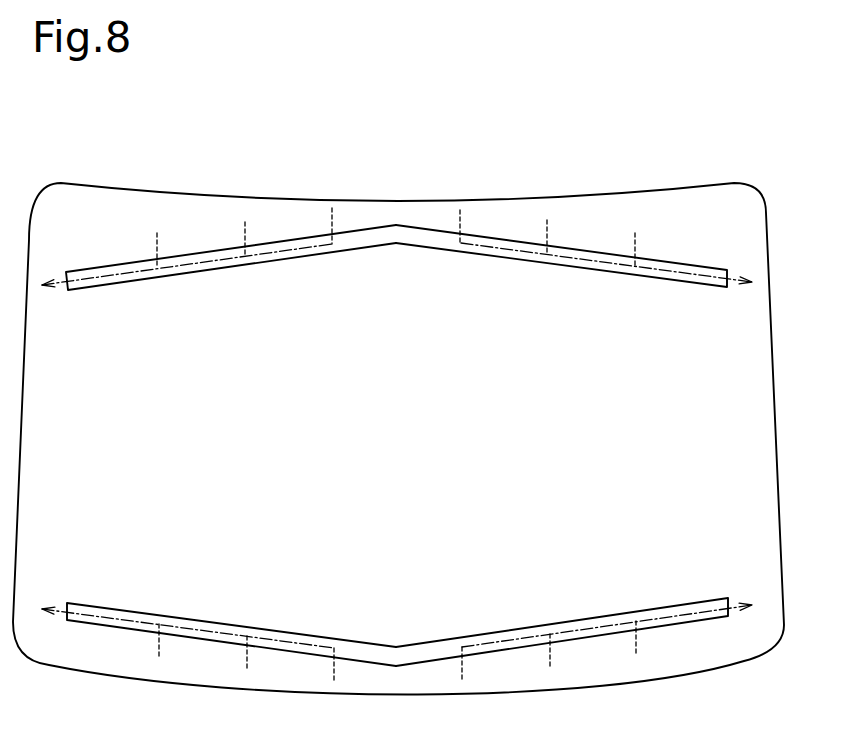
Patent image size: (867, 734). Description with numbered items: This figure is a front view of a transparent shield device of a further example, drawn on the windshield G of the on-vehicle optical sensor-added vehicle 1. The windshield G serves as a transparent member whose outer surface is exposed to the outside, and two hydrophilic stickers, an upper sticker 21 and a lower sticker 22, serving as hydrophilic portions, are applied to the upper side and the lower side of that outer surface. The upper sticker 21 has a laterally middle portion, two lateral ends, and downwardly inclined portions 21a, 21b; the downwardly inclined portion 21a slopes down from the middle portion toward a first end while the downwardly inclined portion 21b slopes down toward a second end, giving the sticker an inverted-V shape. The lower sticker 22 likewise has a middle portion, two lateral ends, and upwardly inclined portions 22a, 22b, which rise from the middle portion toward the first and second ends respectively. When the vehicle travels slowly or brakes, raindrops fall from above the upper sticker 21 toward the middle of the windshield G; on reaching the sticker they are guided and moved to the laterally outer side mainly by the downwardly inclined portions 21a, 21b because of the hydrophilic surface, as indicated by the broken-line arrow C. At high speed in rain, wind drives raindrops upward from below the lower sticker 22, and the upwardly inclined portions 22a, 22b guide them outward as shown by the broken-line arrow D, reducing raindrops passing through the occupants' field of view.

The on-vehicle optical sensor-added vehicle 1 is at (113, 165).
The windshield G is at (198, 210).
The upper sticker 21 is at (582, 250).
The downwardly inclined portion 21a is at (585, 268).
The downwardly inclined portion 21b is at (212, 271).
The arrow C is at (667, 269).
The lower sticker 22 is at (585, 638).
The upwardly inclined portion 22a is at (587, 620).
The upwardly inclined portion 22b is at (212, 623).
The arrow D is at (672, 613).